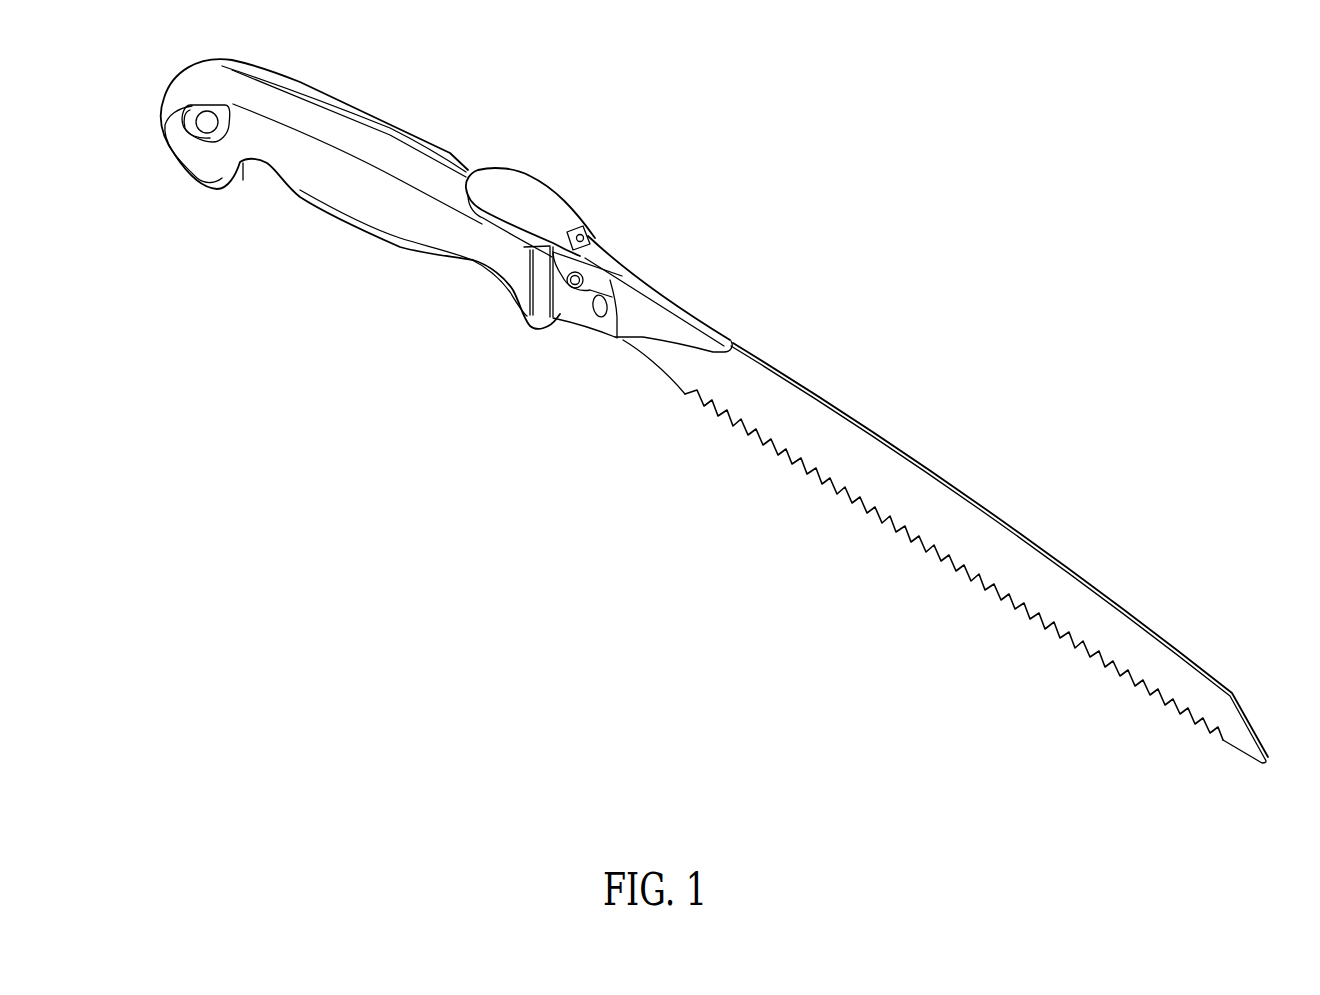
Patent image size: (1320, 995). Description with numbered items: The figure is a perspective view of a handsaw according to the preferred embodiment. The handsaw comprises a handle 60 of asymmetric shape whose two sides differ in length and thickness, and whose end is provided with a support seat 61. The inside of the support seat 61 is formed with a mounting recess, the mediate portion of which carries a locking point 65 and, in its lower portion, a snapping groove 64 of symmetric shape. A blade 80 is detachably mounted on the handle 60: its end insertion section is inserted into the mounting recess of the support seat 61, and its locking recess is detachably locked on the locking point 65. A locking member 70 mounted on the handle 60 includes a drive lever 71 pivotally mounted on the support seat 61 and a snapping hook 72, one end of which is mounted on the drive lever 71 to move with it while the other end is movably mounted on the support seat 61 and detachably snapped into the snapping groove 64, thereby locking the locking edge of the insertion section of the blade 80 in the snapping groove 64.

The handle 60 is at (428, 133).
The support seat 61 is at (684, 307).
The snapping groove 64 is at (617, 340).
The locking point 65 is at (595, 313).
The locking member 70 is at (540, 173).
The drive lever 71 is at (552, 199).
The snapping hook 72 is at (617, 285).
The blade 80 is at (861, 422).